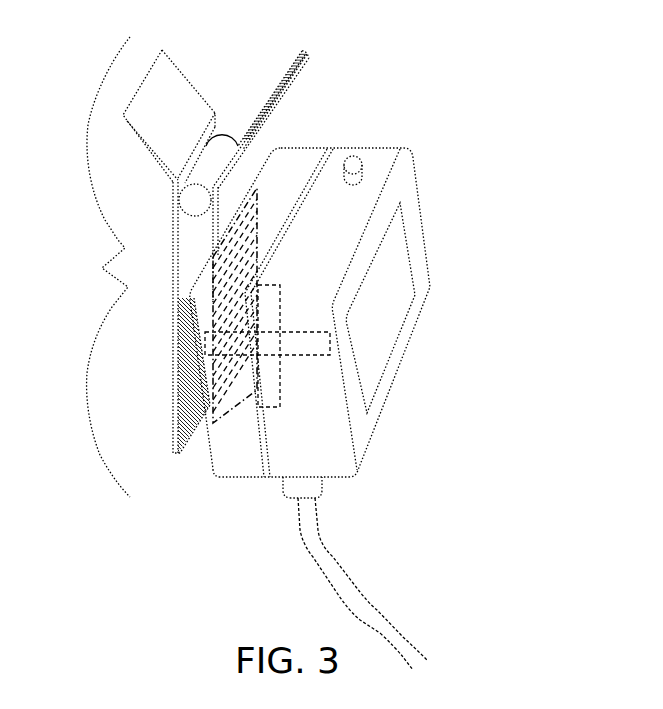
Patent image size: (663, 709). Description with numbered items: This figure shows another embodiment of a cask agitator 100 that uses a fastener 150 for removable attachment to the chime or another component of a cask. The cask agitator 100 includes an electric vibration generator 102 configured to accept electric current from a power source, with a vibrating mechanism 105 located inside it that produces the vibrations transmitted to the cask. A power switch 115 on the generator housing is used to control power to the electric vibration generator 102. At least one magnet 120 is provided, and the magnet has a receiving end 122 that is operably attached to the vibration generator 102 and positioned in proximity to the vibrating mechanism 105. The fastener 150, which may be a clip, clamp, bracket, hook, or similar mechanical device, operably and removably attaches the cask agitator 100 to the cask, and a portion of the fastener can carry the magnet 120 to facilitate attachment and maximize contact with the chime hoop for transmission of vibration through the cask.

The cask agitator 100 is at (486, 251).
The electric vibration generator 102 is at (398, 187).
The vibrating mechanism 105 is at (275, 342).
The power switch 115 is at (353, 167).
The magnet 120 is at (232, 393).
The receiving end 122 is at (255, 230).
The fastener 150 is at (278, 90).